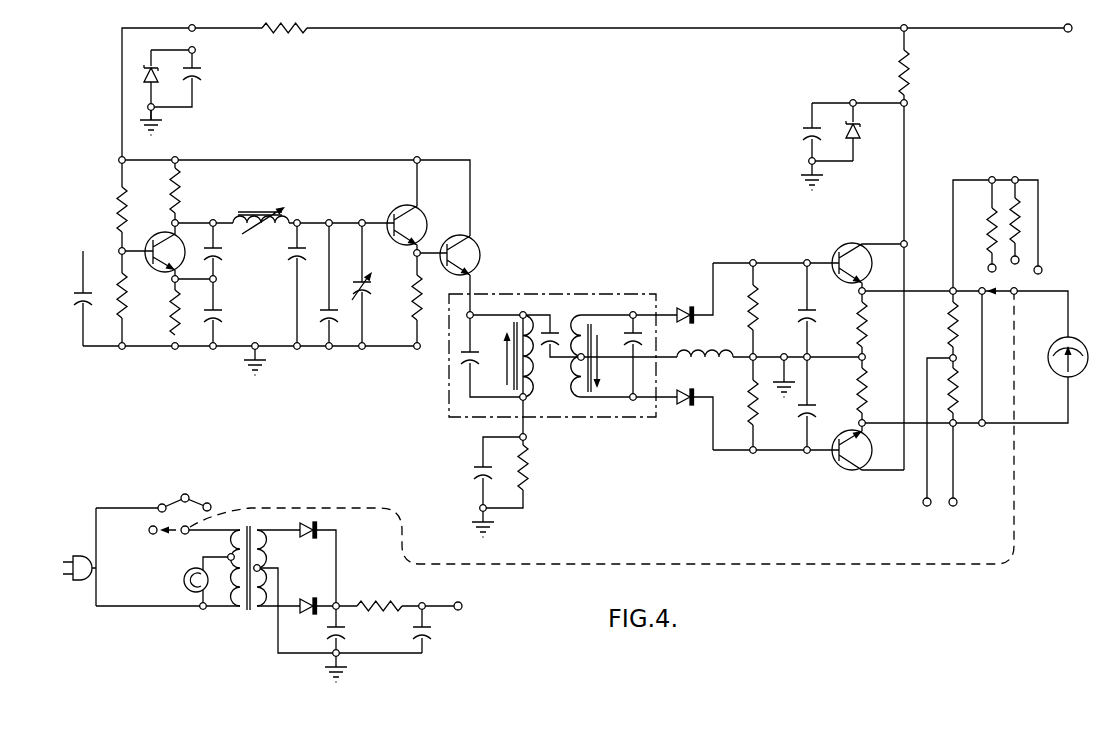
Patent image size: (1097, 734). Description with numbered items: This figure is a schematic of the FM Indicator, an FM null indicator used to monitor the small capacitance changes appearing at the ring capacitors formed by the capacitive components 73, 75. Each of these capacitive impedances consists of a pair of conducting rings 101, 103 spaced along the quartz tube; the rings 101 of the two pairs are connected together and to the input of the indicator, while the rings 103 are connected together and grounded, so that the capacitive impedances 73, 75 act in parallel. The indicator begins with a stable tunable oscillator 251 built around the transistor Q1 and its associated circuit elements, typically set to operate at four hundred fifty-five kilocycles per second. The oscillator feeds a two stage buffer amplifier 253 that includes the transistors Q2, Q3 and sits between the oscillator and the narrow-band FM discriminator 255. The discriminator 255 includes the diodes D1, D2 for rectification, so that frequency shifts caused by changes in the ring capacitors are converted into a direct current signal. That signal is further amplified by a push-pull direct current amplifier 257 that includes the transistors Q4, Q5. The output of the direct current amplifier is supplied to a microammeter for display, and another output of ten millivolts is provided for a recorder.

The oscillator 251 is at (336, 141).
The two stage buffer amplifier 253 is at (522, 243).
The discriminator 255 is at (641, 285).
The push-pull direct current amplifier 257 is at (812, 248).
The capacitive component 73 is at (286, 257).
The capacitive component 75 is at (324, 319).
The conducting ring 101 is at (289, 248).
The conducting ring 103 is at (290, 263).
The transistor Q1 is at (180, 237).
The transistor Q2 is at (420, 212).
The transistor Q3 is at (480, 256).
The transistor Q4 is at (853, 243).
The transistor Q5 is at (848, 470).
The diode D1 is at (683, 307).
The diode D2 is at (686, 404).